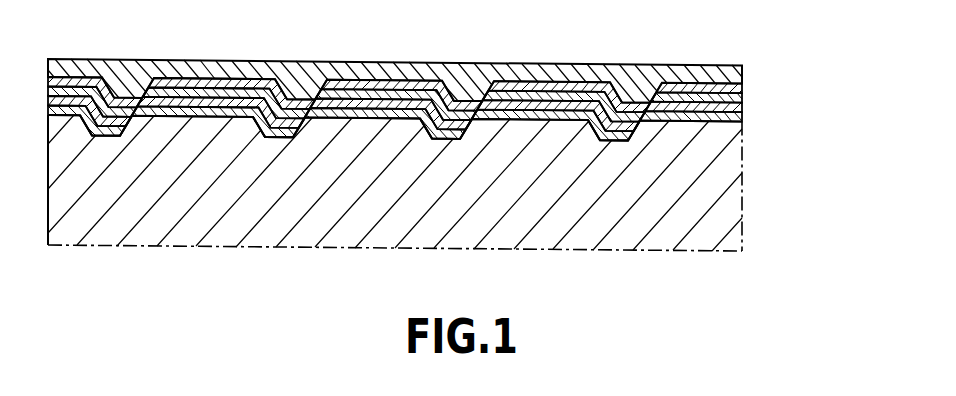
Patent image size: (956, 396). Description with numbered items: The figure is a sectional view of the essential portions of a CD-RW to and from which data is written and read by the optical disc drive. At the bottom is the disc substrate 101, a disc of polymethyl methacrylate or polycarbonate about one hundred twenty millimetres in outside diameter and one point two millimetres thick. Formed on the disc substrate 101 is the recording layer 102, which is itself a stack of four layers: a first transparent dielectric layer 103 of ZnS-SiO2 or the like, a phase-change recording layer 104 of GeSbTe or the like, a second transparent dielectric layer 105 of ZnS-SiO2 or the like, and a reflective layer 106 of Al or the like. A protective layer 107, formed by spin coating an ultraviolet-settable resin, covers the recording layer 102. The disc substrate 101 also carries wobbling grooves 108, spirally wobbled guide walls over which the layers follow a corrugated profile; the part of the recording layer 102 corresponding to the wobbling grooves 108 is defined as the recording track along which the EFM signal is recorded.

The disc substrate 101 is at (737, 213).
The recording layer 102 is at (475, 100).
The first transparent dielectric layer 103 is at (743, 117).
The phase-change recording layer 104 is at (743, 107).
The second transparent dielectric layer 105 is at (743, 97).
The reflective layer 106 is at (743, 87).
The protective layer 107 is at (707, 72).
The wobbling grooves 108 is at (99, 100).